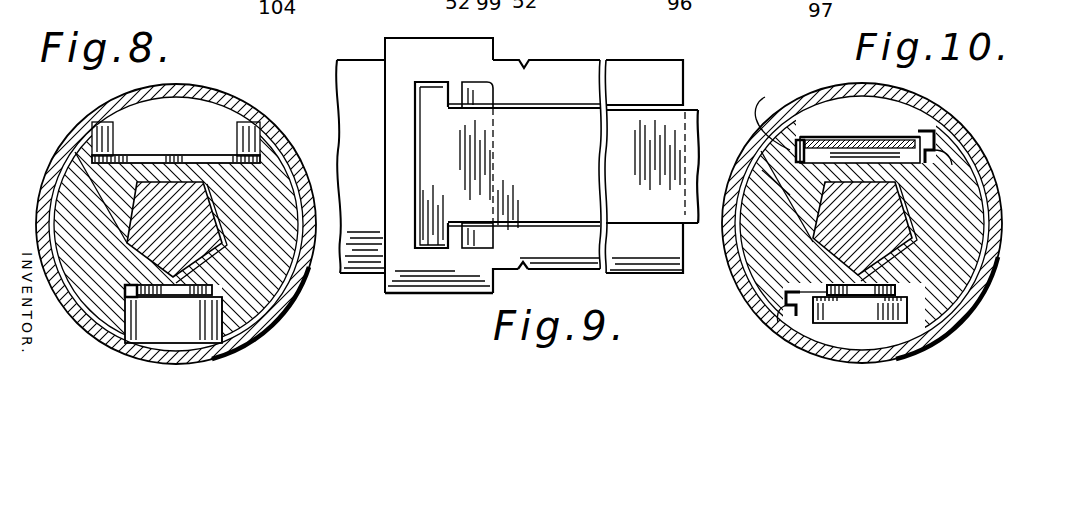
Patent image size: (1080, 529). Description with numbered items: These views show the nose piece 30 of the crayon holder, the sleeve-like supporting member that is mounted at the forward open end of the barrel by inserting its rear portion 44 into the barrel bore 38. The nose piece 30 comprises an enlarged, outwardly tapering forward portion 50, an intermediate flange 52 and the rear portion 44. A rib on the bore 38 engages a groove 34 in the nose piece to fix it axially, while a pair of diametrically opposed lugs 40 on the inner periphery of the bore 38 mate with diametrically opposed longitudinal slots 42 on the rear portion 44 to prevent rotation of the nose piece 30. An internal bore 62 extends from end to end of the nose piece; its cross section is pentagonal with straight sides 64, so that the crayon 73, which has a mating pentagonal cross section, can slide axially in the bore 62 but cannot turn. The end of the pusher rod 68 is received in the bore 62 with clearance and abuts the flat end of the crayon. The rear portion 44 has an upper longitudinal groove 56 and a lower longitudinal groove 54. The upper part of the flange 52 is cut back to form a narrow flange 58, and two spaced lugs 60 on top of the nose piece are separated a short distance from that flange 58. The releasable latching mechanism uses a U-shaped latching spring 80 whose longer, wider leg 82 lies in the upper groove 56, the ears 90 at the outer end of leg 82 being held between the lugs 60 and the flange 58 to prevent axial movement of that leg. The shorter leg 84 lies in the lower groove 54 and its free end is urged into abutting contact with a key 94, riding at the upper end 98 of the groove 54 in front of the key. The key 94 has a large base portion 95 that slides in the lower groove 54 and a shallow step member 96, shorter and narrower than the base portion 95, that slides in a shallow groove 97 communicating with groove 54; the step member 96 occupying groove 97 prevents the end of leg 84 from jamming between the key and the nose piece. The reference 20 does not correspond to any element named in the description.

In FIG. 10, the coupling assembly 20 is at (922, 97).
In FIG. 8, the nose piece 30 is at (295, 262).
In FIG. 9, the nose piece 30 is at (579, 56).
In FIG. 10, the nose piece 30 is at (976, 182).
In FIG. 9, the groove 34 is at (526, 271).
In FIG. 10, the bore 38 is at (968, 238).
In FIG. 10, the lugs 40 is at (939, 146).
In FIG. 10, the longitudinal slots 42 is at (952, 160).
In FIG. 10, the rear portion 44 is at (772, 114).
In FIG. 9, the forward portion 50 is at (337, 70).
In FIG. 9, the intermediate flange 52 is at (400, 297).
In FIG. 8, the lower longitudinal groove 54 is at (215, 345).
In FIG. 10, the lower longitudinal groove 54 is at (918, 316).
In FIG. 8, the upper longitudinal groove 56 is at (76, 152).
In FIG. 9, the upper longitudinal groove 56 is at (664, 102).
In FIG. 10, the upper longitudinal groove 56 is at (800, 135).
In FIG. 9, the narrow flange 58 is at (399, 92).
In FIG. 8, the lugs 60 is at (228, 150).
In FIG. 9, the lugs 60 is at (478, 236).
In FIG. 8, the internal bore 62 is at (132, 190).
In FIG. 10, the internal bore 62 is at (812, 232).
In FIG. 10, the straight sides 64 is at (791, 196).
In FIG. 10, the pusher rod 68 is at (950, 192).
In FIG. 8, the crayon 73 is at (197, 195).
In FIG. 10, the crayon 73 is at (879, 250).
In FIG. 9, the U-shaped latching spring 80 is at (629, 127).
In FIG. 8, the leg 82 is at (176, 156).
In FIG. 9, the leg 82 is at (736, 110).
In FIG. 10, the leg 82 is at (827, 145).
In FIG. 10, the leg 84 is at (864, 304).
In FIG. 9, the ears 90 is at (430, 238).
In FIG. 8, the key 94 is at (165, 328).
In FIG. 8, the base portion 95 is at (190, 322).
In FIG. 10, the base portion 95 is at (815, 323).
In FIG. 8, the step member 96 is at (220, 300).
In FIG. 10, the step member 96 is at (910, 303).
In FIG. 8, the shallow groove 97 is at (205, 278).
In FIG. 10, the shallow groove 97 is at (896, 280).
In FIG. 8, the upper end of groove 98 is at (126, 287).
In FIG. 10, the upper end of groove 98 is at (797, 290).